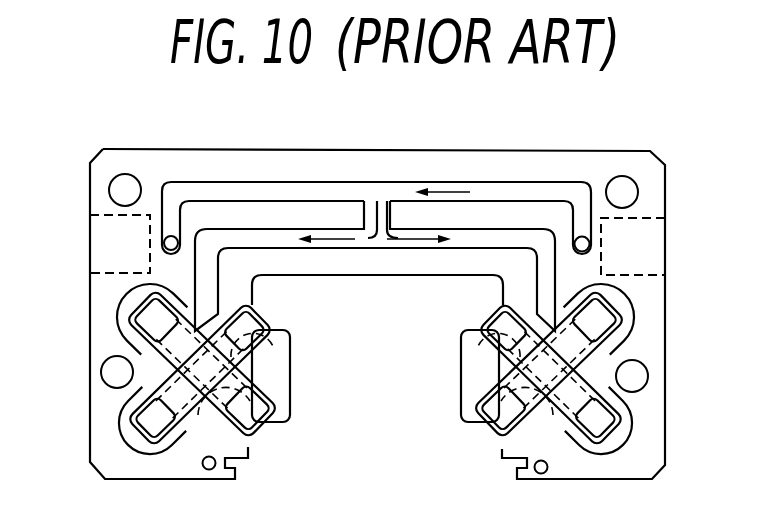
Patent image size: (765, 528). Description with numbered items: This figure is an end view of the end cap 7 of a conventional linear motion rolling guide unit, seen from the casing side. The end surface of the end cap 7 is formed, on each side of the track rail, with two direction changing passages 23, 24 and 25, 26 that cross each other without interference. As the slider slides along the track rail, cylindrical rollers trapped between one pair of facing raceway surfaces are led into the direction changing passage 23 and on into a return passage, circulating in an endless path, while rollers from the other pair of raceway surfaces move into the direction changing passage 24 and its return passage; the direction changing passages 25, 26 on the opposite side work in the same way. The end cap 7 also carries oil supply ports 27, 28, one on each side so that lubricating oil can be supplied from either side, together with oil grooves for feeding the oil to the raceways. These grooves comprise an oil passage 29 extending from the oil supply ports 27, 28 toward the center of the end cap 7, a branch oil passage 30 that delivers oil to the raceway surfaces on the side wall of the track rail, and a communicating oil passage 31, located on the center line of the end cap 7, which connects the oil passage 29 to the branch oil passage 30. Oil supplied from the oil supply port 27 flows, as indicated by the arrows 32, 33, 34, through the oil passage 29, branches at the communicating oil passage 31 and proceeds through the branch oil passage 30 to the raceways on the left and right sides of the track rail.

The end cap 7 is at (517, 142).
The direction changing passage 23 is at (291, 361).
The direction changing passage 24 is at (259, 432).
The direction changing passage 25 is at (464, 362).
The direction changing passage 26 is at (490, 443).
The oil supply port 27 is at (650, 242).
The oil supply port 28 is at (92, 233).
The oil passage 29 is at (216, 190).
The branch oil passage 30 is at (535, 238).
The communicating oil passage 31 is at (362, 215).
The arrow 32 is at (445, 190).
The arrow 33 is at (408, 232).
The arrow 34 is at (352, 238).